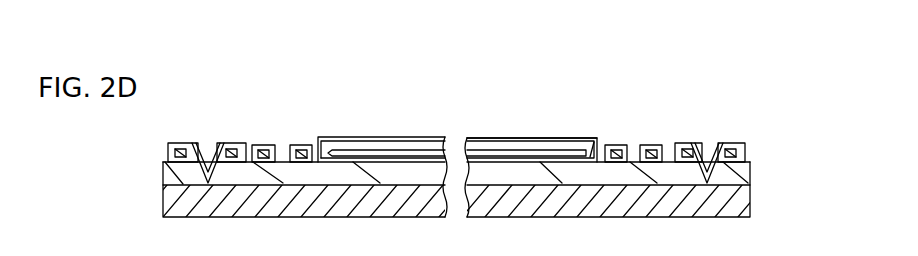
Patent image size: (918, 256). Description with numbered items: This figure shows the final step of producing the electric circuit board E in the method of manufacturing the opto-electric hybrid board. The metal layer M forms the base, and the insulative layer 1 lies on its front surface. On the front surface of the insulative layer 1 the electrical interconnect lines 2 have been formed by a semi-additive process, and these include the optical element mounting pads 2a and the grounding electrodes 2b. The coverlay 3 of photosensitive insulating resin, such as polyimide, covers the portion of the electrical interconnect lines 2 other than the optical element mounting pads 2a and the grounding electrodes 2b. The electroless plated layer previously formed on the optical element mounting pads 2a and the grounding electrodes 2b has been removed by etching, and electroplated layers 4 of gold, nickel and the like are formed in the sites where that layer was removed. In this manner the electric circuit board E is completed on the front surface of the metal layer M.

The insulative layer 1 is at (390, 170).
The electrical interconnect lines 2 is at (499, 148).
The optical element mounting pads 2a is at (265, 142).
The grounding electrodes 2b is at (177, 141).
The coverlay 3 is at (529, 150).
The electroplated layers 4 is at (222, 142).
The electric circuit board E is at (770, 142).
The metal layer M is at (751, 198).